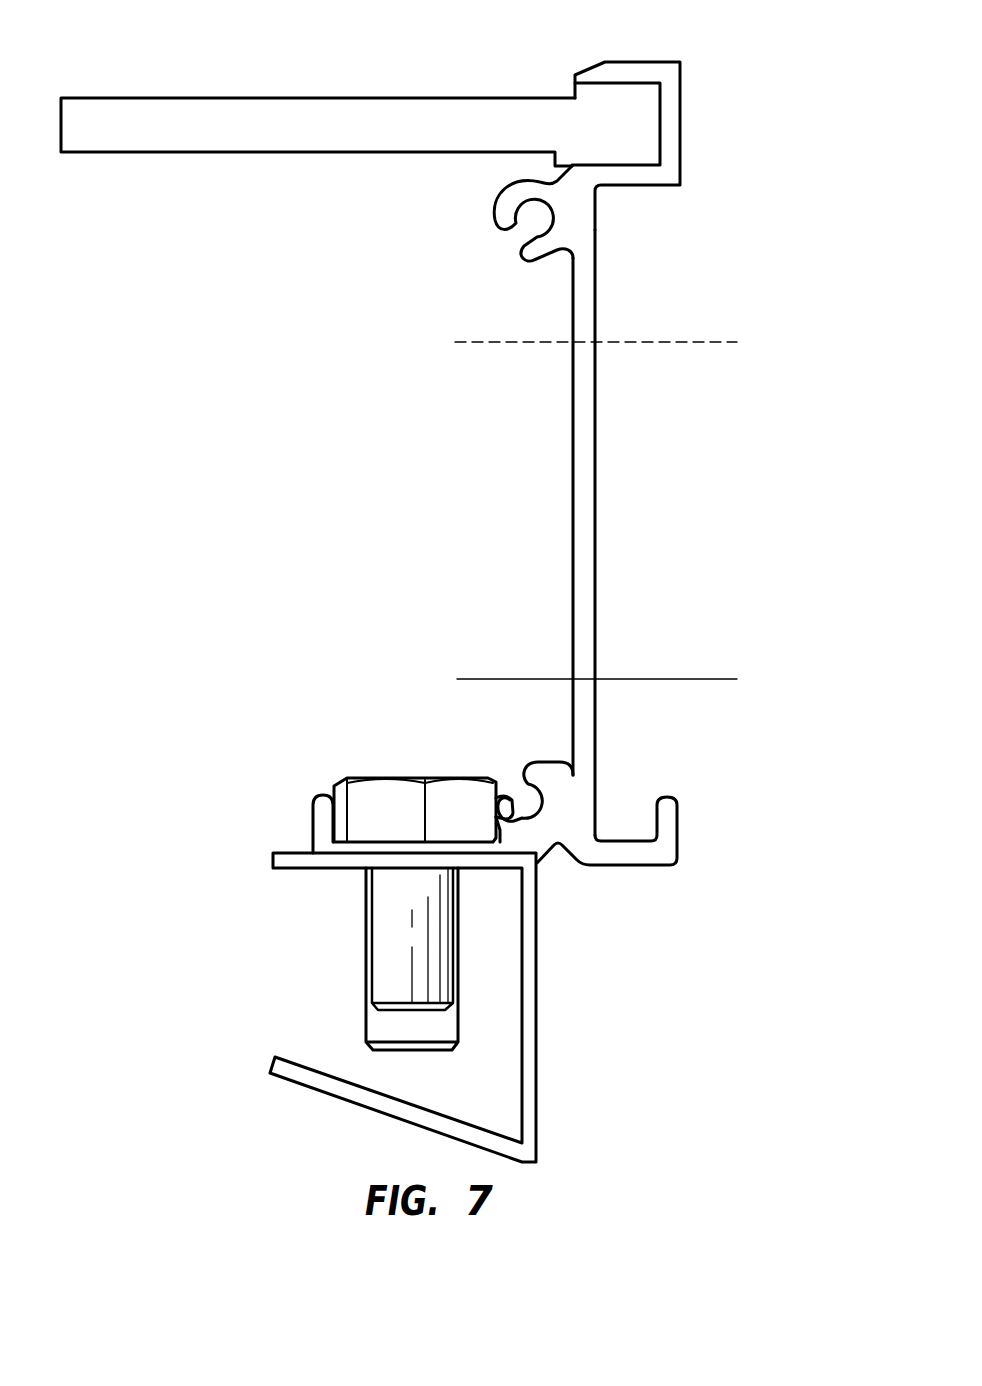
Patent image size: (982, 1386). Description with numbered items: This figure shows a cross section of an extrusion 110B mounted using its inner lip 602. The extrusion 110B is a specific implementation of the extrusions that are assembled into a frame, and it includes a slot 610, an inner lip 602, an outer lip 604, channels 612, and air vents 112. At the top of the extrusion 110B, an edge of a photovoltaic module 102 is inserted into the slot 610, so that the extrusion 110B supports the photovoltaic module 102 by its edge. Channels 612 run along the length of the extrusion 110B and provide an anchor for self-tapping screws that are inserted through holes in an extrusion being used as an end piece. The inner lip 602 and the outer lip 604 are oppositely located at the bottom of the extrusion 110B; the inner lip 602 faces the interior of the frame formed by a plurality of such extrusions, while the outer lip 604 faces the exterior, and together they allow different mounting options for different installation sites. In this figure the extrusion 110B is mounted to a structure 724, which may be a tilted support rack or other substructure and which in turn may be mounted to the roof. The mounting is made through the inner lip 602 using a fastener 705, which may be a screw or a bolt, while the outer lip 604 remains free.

The photovoltaic module 102 is at (157, 98).
The slot 610 is at (680, 118).
The channels 612 is at (530, 222).
The extrusion 110B is at (758, 369).
The air vents 112 is at (595, 468).
The fastener 705 is at (397, 790).
The inner lip 602 is at (320, 827).
The outer lip 604 is at (662, 850).
The structure 724 is at (537, 1105).